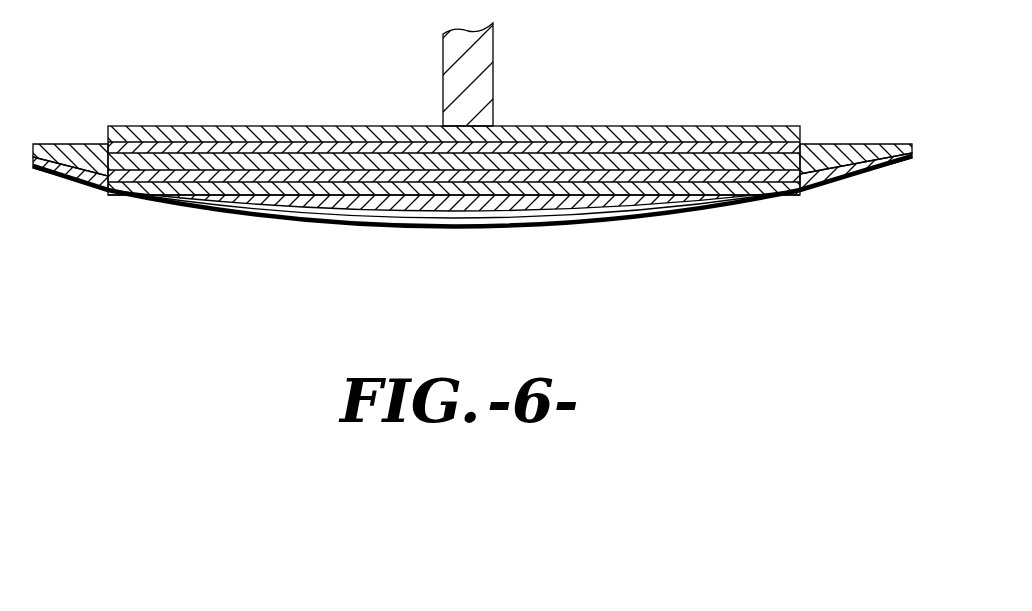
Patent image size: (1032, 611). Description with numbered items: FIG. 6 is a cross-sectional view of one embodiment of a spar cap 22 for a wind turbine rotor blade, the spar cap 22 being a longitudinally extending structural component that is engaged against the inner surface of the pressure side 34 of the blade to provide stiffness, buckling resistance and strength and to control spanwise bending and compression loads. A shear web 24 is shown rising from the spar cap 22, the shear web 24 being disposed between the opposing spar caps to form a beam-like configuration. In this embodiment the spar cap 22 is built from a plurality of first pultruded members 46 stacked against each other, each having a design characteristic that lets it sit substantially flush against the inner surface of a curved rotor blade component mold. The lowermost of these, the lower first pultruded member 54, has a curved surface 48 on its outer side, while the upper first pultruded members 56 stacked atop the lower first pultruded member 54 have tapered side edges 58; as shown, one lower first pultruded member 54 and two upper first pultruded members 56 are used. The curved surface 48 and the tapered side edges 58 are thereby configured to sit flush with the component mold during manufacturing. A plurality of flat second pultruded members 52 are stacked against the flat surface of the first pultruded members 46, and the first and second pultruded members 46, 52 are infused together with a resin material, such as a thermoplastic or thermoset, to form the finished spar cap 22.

The spar cap 22 is at (665, 115).
The shear web 24 is at (495, 77).
The pressure side 34 is at (578, 227).
The first pultruded member 46 is at (323, 205).
The curved surface 48 is at (450, 228).
The second pultruded member 52 is at (108, 135).
The lower first pultruded member 54 is at (407, 228).
The upper first pultruded member 56 is at (393, 188).
The tapered side edges 58 is at (765, 198).